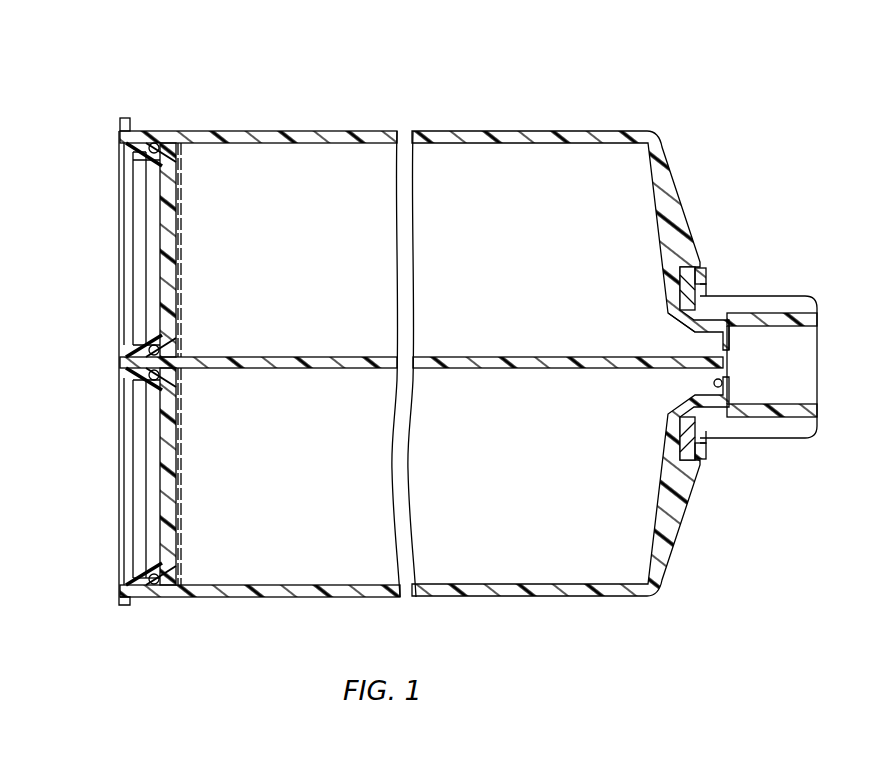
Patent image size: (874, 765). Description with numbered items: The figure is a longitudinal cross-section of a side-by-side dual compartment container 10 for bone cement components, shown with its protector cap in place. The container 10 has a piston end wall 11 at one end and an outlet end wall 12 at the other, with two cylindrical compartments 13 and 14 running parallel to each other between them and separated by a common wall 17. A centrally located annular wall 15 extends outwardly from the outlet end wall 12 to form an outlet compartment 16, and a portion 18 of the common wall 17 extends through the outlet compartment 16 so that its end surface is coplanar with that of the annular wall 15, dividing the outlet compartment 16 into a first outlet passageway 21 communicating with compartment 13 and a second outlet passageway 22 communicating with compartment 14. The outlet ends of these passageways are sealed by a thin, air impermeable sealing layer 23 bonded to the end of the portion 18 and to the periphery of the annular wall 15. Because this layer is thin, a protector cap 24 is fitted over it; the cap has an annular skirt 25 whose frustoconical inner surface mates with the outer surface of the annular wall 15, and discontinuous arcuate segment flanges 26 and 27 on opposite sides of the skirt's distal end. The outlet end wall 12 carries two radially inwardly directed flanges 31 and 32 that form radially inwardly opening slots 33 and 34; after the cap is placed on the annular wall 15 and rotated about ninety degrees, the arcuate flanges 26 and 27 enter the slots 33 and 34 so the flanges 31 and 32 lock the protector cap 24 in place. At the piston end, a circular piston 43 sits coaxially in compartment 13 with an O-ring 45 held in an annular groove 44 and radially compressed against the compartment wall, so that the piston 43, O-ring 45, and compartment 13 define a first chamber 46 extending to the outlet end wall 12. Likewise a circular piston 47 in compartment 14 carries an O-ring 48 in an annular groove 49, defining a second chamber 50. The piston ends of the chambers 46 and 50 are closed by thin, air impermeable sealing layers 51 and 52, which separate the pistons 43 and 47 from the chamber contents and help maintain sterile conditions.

The dual compartment container 10 is at (777, 548).
The piston end wall 11 is at (122, 118).
The outlet end wall 12 is at (683, 181).
The cylindrical compartment 13 is at (262, 146).
The cylindrical compartment 14 is at (468, 588).
The annular wall 15 is at (733, 332).
The outlet compartment 16 is at (662, 322).
The common wall 17 is at (470, 357).
The portion of the common wall 18 is at (729, 354).
The first outlet passageway 21 is at (661, 348).
The second outlet passageway 22 is at (660, 379).
The sealing layer 23 is at (723, 383).
The protector cap 24 is at (818, 368).
The annular skirt 25 is at (735, 422).
The arcuate segment flange 26 is at (703, 447).
The arcuate segment flange 27 is at (712, 307).
The radially inwardly directed flange 31 is at (703, 266).
The radially inwardly directed flange 32 is at (700, 472).
The radially inwardly opening slot 33 is at (678, 452).
The radially inwardly opening slot 34 is at (678, 286).
The circular piston 43 is at (119, 175).
The annular groove 44 is at (166, 138).
The O-ring 45 is at (152, 142).
The first chamber 46 is at (544, 257).
The circular piston 47 is at (119, 548).
The O-ring 48 is at (153, 592).
The annular groove 49 is at (166, 598).
The second chamber 50 is at (544, 486).
The sealing layer 51 is at (183, 208).
The sealing layer 52 is at (183, 518).